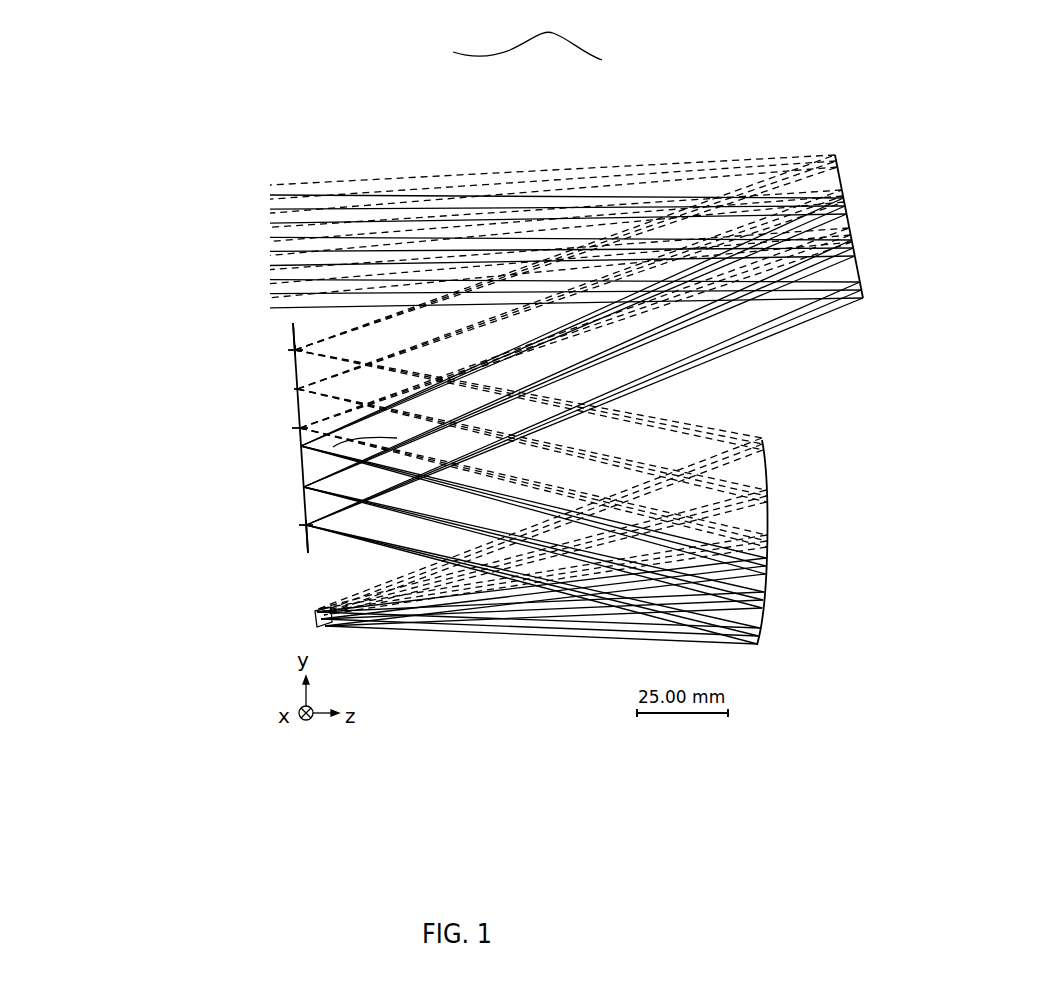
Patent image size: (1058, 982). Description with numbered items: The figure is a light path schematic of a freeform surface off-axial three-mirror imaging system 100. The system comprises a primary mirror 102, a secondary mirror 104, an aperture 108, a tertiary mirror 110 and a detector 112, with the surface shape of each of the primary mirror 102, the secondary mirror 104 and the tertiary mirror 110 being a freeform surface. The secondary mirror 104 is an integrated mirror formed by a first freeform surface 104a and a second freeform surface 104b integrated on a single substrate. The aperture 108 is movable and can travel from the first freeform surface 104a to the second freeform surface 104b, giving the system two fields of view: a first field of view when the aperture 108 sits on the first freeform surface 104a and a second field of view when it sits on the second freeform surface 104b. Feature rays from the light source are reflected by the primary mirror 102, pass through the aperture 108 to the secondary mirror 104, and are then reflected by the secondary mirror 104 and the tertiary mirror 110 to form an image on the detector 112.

The freeform surface off-axial three-mirror imaging system 100 is at (527, 38).
The primary mirror 102 is at (841, 183).
The secondary mirror 104 is at (170, 342).
The first freeform surface 104a is at (307, 538).
The second freeform surface 104b is at (293, 333).
The aperture 108 is at (307, 503).
The tertiary mirror 110 is at (765, 512).
The detector 112 is at (317, 613).